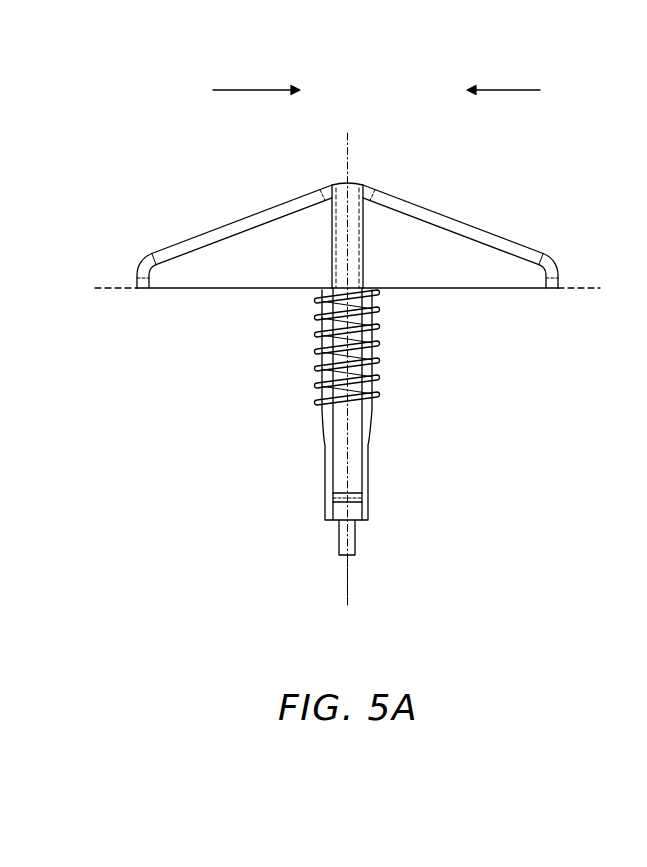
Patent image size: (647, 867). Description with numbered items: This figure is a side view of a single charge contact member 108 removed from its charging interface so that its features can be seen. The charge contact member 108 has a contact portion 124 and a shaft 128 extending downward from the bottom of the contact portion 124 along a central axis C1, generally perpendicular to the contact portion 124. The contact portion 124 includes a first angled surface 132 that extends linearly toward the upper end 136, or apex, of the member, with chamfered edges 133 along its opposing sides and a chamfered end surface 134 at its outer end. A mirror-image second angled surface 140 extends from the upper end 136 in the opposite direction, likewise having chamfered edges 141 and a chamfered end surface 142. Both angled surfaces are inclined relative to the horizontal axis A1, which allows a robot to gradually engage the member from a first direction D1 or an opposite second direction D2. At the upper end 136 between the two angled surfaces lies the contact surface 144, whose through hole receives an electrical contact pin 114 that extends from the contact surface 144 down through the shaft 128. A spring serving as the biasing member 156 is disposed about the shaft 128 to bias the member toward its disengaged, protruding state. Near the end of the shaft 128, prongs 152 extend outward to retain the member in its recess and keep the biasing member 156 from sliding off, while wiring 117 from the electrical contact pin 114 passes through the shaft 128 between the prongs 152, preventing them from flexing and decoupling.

The charge contact member 108 is at (363, 58).
The first direction D1 is at (256, 79).
The second direction D2 is at (503, 79).
The horizontal axis A1 is at (117, 286).
The central axis C1 is at (349, 583).
The electrical contact pin 114 is at (341, 184).
The upper end 136 is at (347, 120).
The contact surface 144 is at (357, 178).
The contact portion 124 is at (368, 184).
The first angled surface 132 is at (220, 225).
The chamfered edges 133 is at (180, 248).
The chamfered end surface 134 is at (140, 267).
The second angled surface 140 is at (452, 215).
The chamfered edges 141 is at (489, 240).
The chamfered end surface 142 is at (553, 268).
The shaft 128 is at (326, 431).
The biasing member 156 is at (391, 343).
The prongs 152 is at (357, 508).
The wiring 117 is at (353, 545).